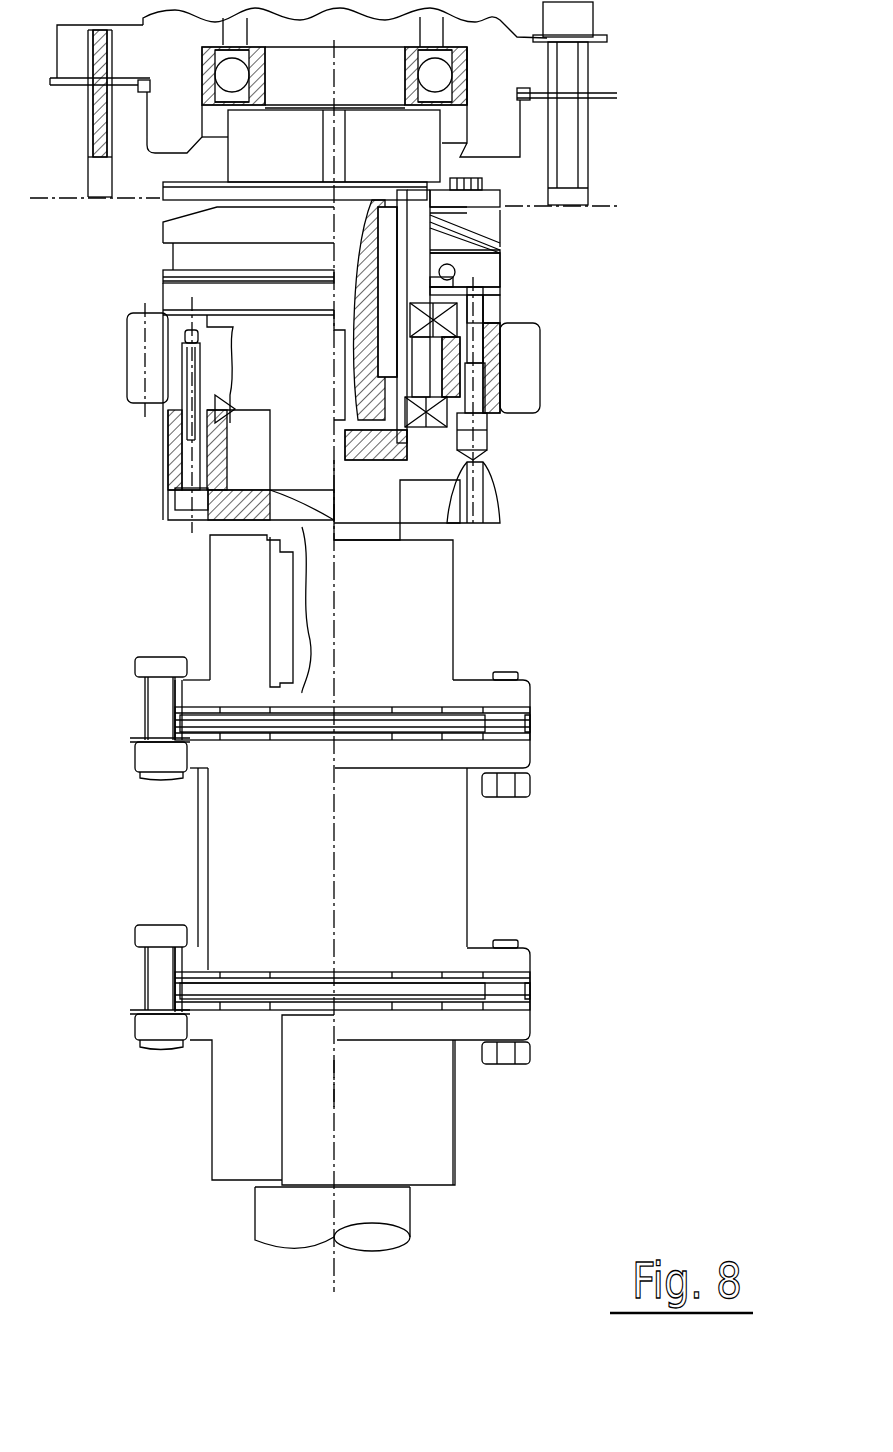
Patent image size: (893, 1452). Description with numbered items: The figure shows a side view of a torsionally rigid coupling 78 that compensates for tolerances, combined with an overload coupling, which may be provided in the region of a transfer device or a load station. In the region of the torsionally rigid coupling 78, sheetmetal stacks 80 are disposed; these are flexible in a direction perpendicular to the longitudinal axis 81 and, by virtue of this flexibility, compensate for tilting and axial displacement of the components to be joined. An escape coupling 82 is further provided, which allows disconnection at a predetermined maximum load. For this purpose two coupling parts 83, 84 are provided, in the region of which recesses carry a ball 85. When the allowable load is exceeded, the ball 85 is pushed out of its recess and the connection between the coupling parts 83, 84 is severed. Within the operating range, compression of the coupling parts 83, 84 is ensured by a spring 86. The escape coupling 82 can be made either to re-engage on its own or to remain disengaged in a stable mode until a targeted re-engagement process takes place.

The torsionally rigid coupling 78 is at (468, 848).
The sheetmetal stacks 80 is at (455, 720).
The longitudinal axis 81 is at (340, 1078).
The escape coupling 82 is at (498, 297).
The coupling part 83 is at (493, 258).
The coupling part 84 is at (503, 290).
The ball 85 is at (505, 303).
The spring 86 is at (498, 226).